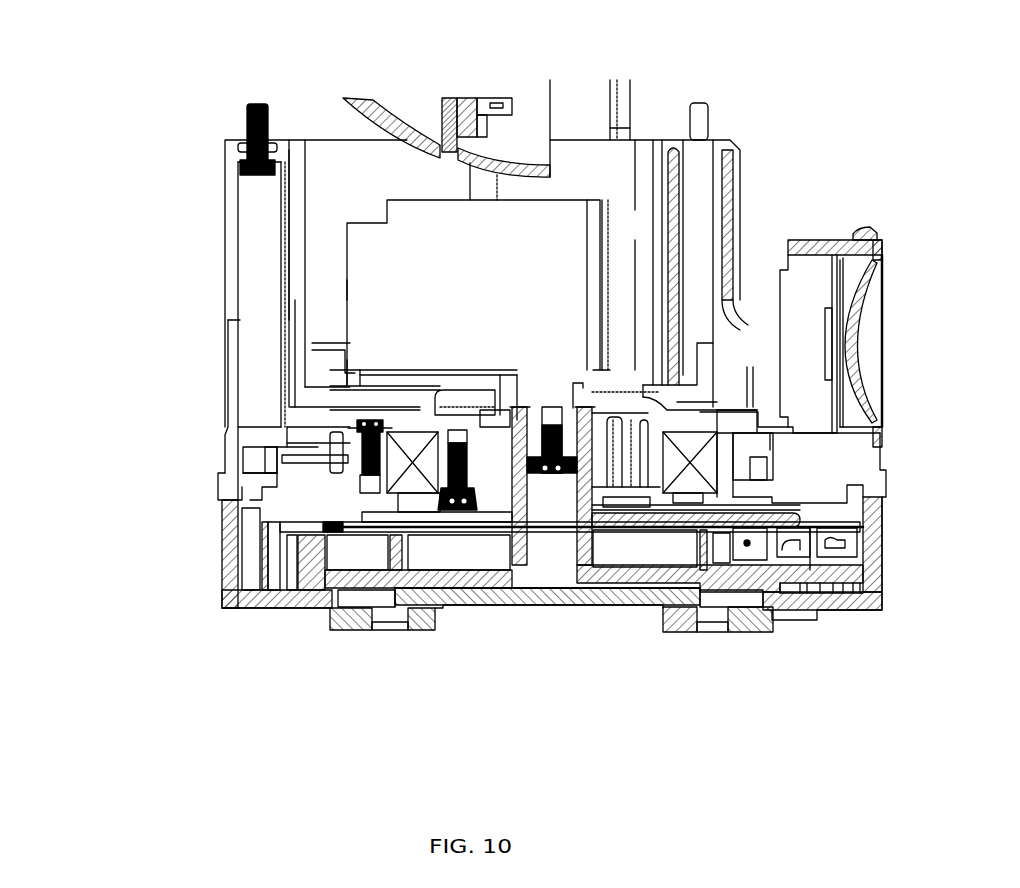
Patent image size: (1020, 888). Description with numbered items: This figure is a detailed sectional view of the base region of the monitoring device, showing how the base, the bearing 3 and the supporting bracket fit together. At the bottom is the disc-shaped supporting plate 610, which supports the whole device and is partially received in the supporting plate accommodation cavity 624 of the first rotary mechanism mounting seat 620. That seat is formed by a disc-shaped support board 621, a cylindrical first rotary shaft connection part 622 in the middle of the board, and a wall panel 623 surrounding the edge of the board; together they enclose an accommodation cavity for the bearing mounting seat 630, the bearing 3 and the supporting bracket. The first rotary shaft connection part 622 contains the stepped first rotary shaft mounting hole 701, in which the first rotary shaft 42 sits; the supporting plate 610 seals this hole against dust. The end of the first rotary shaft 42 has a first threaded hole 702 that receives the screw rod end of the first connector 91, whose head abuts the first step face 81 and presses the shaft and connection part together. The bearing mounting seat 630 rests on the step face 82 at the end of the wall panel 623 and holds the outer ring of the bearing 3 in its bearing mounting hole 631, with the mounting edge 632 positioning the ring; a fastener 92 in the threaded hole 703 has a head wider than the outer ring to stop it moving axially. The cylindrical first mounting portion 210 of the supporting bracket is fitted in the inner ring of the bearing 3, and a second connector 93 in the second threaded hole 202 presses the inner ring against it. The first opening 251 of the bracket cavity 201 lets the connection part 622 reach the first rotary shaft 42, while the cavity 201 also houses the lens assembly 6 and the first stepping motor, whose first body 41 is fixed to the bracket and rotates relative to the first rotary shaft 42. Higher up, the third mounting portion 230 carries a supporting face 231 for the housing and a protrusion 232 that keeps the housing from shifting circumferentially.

The lens assembly 6 is at (360, 103).
The protrusion 232 is at (248, 135).
The supporting face 231 is at (240, 150).
The third mounting portion 230 is at (297, 160).
The cavity 201 is at (327, 262).
The first body 41 is at (587, 293).
The first rotary shaft 42 is at (568, 413).
The first mounting portion 210 is at (428, 425).
The second threaded hole 202 is at (457, 428).
The first step face 81 is at (520, 430).
The first opening 251 is at (648, 462).
The bearing 3 is at (692, 448).
The fastener 92 is at (340, 445).
The bearing mounting hole 631 is at (383, 503).
The threaded hole 703 is at (362, 487).
The mounting edge 632 is at (335, 455).
The step face 82 is at (232, 498).
The second connector 93 is at (456, 508).
The first connector 91 is at (548, 475).
The bearing mounting seat 630 is at (300, 500).
The first rotary mechanism mounting seat 620 is at (95, 638).
The wall panel 623 is at (300, 545).
The first rotary shaft connection part 622 is at (430, 497).
The support board 621 is at (365, 600).
The supporting plate accommodation cavity 624 is at (358, 612).
The supporting plate 610 is at (366, 612).
The first rotary shaft mounting hole 701 is at (555, 540).
The first threaded hole 702 is at (560, 435).